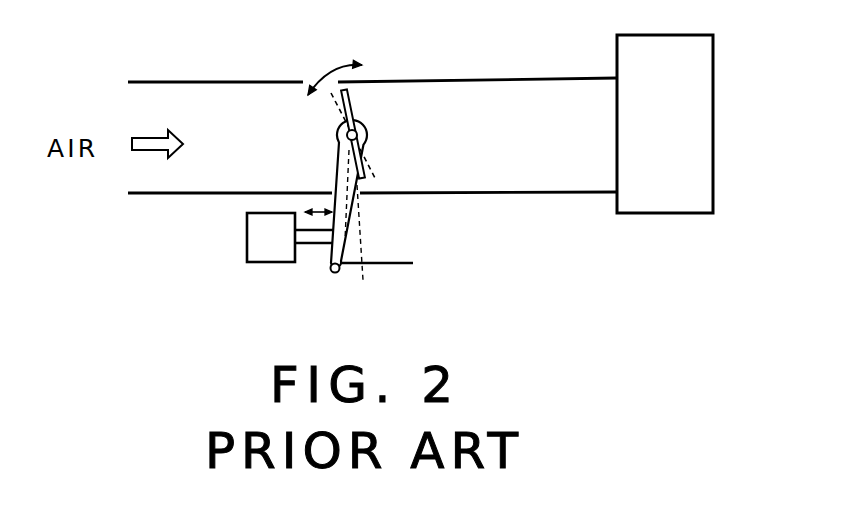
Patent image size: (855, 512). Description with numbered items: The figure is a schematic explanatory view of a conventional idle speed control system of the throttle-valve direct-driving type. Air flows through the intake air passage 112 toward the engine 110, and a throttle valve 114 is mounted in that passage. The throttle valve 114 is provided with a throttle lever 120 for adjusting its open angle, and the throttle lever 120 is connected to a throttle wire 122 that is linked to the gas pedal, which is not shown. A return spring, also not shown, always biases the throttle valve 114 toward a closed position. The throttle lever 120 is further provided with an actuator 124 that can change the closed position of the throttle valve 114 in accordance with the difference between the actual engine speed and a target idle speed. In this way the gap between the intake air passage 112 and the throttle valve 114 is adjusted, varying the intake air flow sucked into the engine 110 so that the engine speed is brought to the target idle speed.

The engine 110 is at (713, 127).
The intake air passage 112 is at (232, 96).
The throttle valve 114 is at (343, 103).
The throttle lever 120 is at (329, 265).
The throttle wire 122 is at (393, 265).
The actuator 124 is at (247, 238).